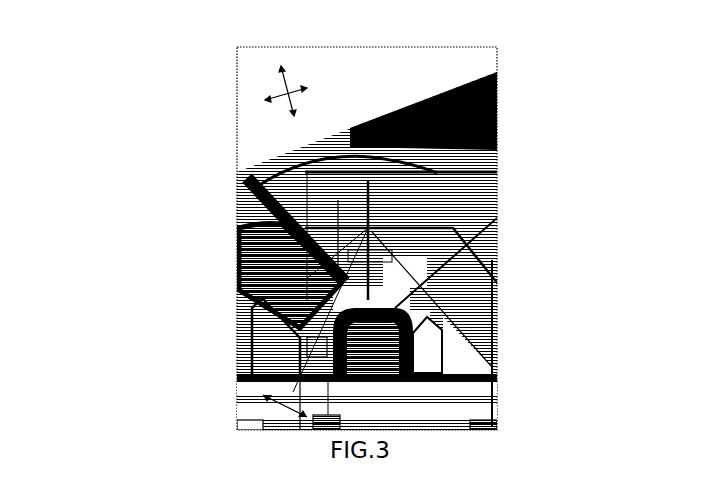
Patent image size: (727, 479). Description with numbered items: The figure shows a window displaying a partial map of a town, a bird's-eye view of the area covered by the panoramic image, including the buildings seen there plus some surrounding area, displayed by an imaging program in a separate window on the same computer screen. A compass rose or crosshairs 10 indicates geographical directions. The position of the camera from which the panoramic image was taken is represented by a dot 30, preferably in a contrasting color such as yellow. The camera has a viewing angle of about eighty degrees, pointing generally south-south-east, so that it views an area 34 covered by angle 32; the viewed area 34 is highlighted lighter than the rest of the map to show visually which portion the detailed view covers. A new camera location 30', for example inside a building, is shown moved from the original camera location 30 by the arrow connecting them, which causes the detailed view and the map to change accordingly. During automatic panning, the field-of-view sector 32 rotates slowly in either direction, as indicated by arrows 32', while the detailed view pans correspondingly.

The compass rose or crosshairs 10 is at (286, 91).
The dot 30 is at (445, 271).
The new camera location 30' is at (198, 253).
The angle 32 is at (505, 263).
The arrows 32' is at (216, 413).
The viewed area 34 is at (413, 418).